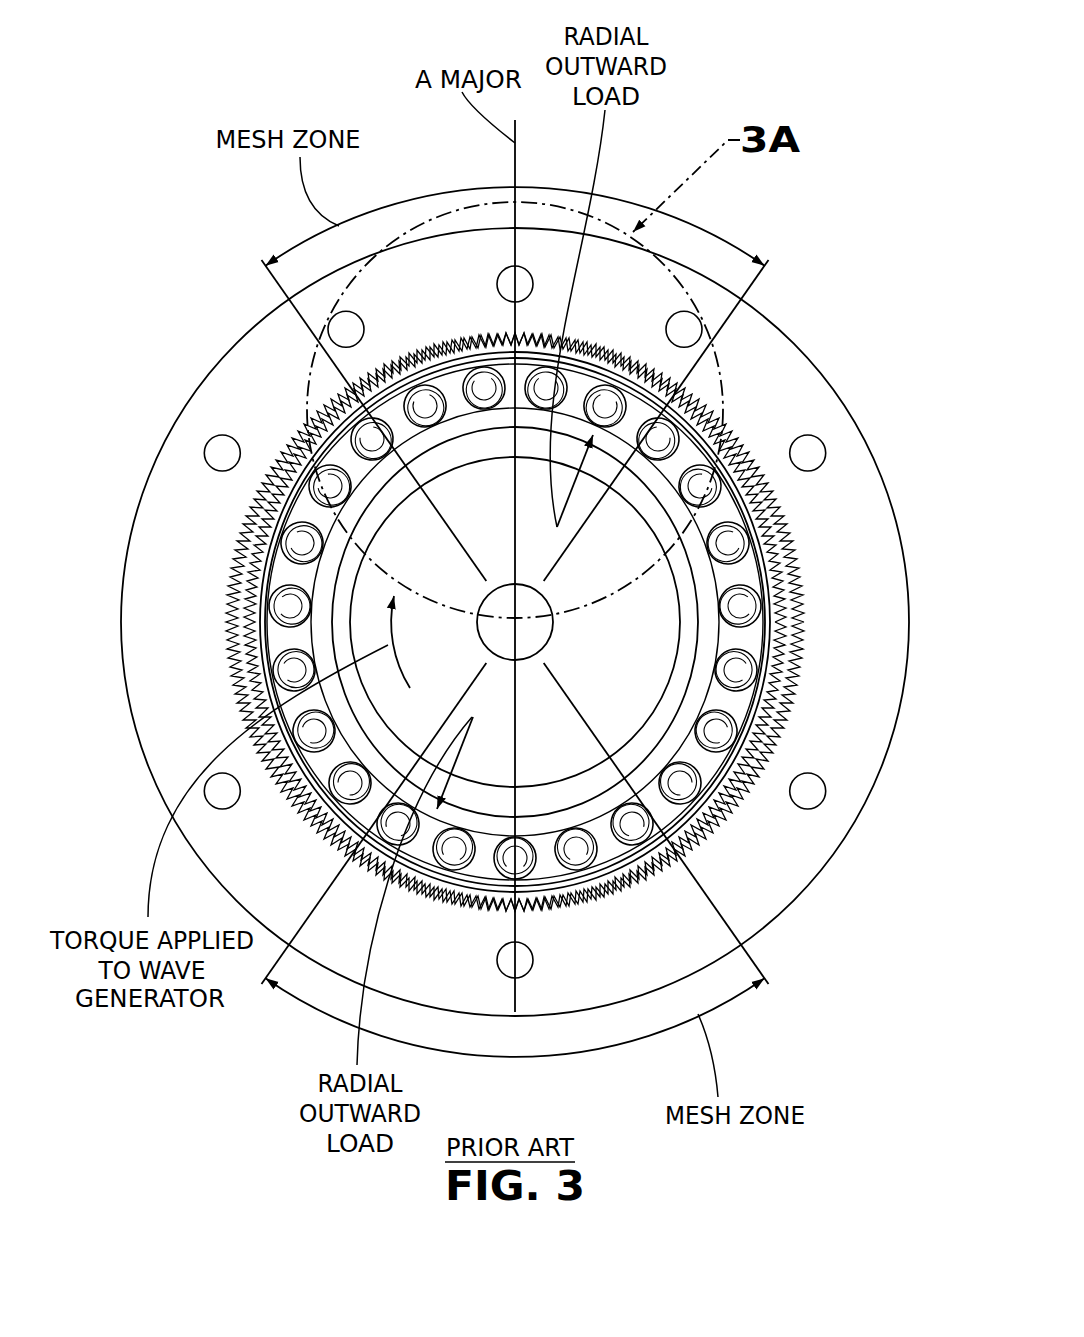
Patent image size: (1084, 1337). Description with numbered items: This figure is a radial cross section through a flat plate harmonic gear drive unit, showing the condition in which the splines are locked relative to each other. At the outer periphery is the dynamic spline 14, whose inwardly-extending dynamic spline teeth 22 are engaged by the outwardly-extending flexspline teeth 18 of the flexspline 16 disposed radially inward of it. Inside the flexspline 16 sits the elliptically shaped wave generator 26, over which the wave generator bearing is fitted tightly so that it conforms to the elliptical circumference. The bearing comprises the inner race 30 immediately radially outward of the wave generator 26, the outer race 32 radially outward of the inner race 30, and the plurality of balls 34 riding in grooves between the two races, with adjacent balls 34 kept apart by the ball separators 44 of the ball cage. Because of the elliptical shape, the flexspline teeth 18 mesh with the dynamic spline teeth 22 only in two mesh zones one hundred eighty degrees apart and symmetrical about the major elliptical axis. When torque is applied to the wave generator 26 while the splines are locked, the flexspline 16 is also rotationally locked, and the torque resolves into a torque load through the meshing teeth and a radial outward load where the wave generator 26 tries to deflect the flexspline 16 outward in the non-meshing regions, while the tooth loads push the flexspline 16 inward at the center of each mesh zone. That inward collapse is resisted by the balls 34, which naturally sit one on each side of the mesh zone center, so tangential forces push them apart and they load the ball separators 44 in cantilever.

The dynamic spline 14 is at (760, 908).
The flexspline 16 is at (553, 622).
The flexspline teeth 18 is at (599, 622).
The dynamic spline teeth 22 is at (340, 398).
The wave generator 26 is at (363, 603).
The inner race 30 is at (643, 772).
The outer race 32 is at (720, 785).
The balls 34 is at (728, 538).
The ball separators 44 is at (767, 558).